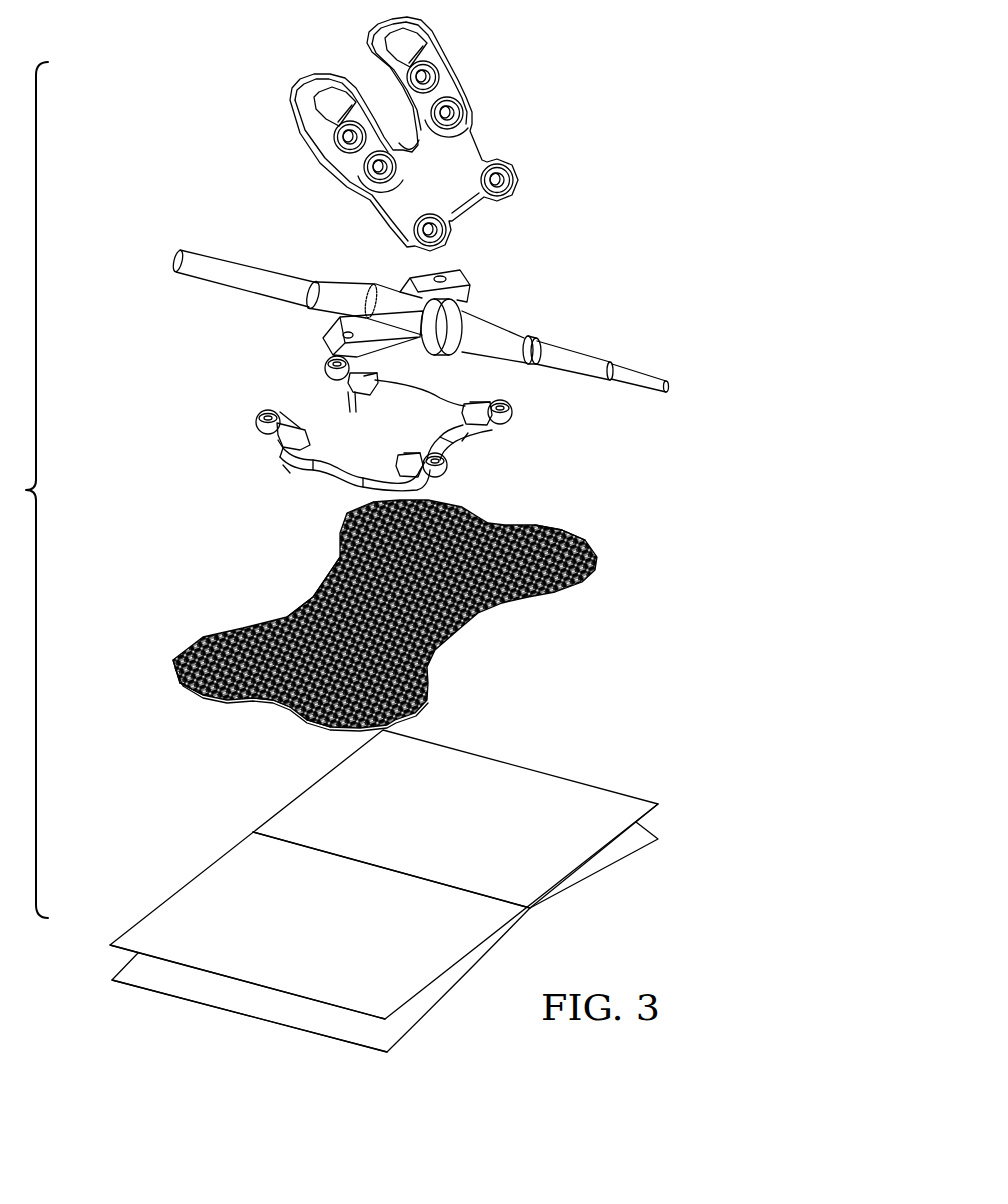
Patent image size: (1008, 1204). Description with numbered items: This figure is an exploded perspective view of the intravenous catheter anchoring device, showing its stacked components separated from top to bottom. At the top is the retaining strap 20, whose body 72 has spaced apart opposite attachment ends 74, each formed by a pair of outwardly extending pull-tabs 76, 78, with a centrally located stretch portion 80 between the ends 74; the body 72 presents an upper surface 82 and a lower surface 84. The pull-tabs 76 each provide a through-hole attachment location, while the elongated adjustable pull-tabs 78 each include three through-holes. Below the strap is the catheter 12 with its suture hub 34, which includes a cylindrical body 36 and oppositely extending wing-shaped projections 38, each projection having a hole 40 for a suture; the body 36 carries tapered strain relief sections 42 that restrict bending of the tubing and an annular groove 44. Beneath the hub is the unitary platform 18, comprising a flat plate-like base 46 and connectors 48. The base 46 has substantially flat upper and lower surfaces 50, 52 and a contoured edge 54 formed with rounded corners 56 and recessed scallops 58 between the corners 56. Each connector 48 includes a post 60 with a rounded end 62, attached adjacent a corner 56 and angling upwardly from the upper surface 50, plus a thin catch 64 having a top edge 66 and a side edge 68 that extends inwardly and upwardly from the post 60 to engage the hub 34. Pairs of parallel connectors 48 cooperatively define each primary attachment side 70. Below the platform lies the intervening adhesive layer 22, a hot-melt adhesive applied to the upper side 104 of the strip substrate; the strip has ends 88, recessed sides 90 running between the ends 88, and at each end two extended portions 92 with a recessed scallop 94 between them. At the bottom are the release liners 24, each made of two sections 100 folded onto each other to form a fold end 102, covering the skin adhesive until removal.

The catheter 12 is at (565, 355).
The platform 18 is at (337, 472).
The retaining strap 20 is at (430, 125).
The intervening adhesive layer 22 is at (379, 632).
The release liners 24 is at (354, 890).
The suture hub 34 is at (487, 328).
The body 36 is at (390, 283).
The wing-shaped projections 38 is at (454, 280).
The hole 40 is at (342, 332).
The tapered strain relief sections 42 is at (338, 288).
The annular groove 44 is at (427, 343).
The base 46 is at (283, 448).
The connectors 48 is at (517, 412).
The upper surface 50 is at (345, 387).
The lower surface 52 is at (290, 473).
The contoured edge 54 is at (492, 430).
The rounded corners 56 is at (450, 480).
The recessed scallops 58 is at (460, 437).
The post 60 is at (262, 430).
The rounded end 62 is at (262, 420).
The catch 64 is at (313, 407).
The top edge 66 is at (423, 450).
The side edge 68 is at (465, 405).
The primary attachment side 70 is at (260, 368).
The body 72 is at (456, 83).
The attachment ends 74 is at (298, 40).
The pull-tabs 76 is at (519, 173).
The pull-tabs 78 is at (431, 32).
The stretch portion 80 is at (472, 129).
The upper surface 82 is at (381, 200).
The lower surface 84 is at (395, 131).
The ends 88 is at (197, 697).
The recessed sides 90 is at (310, 598).
The extended portions 92 is at (178, 678).
The recessed scallops 94 is at (275, 702).
The sections 100 is at (282, 939).
The fold end 102 is at (380, 863).
The upper side 104 is at (577, 540).